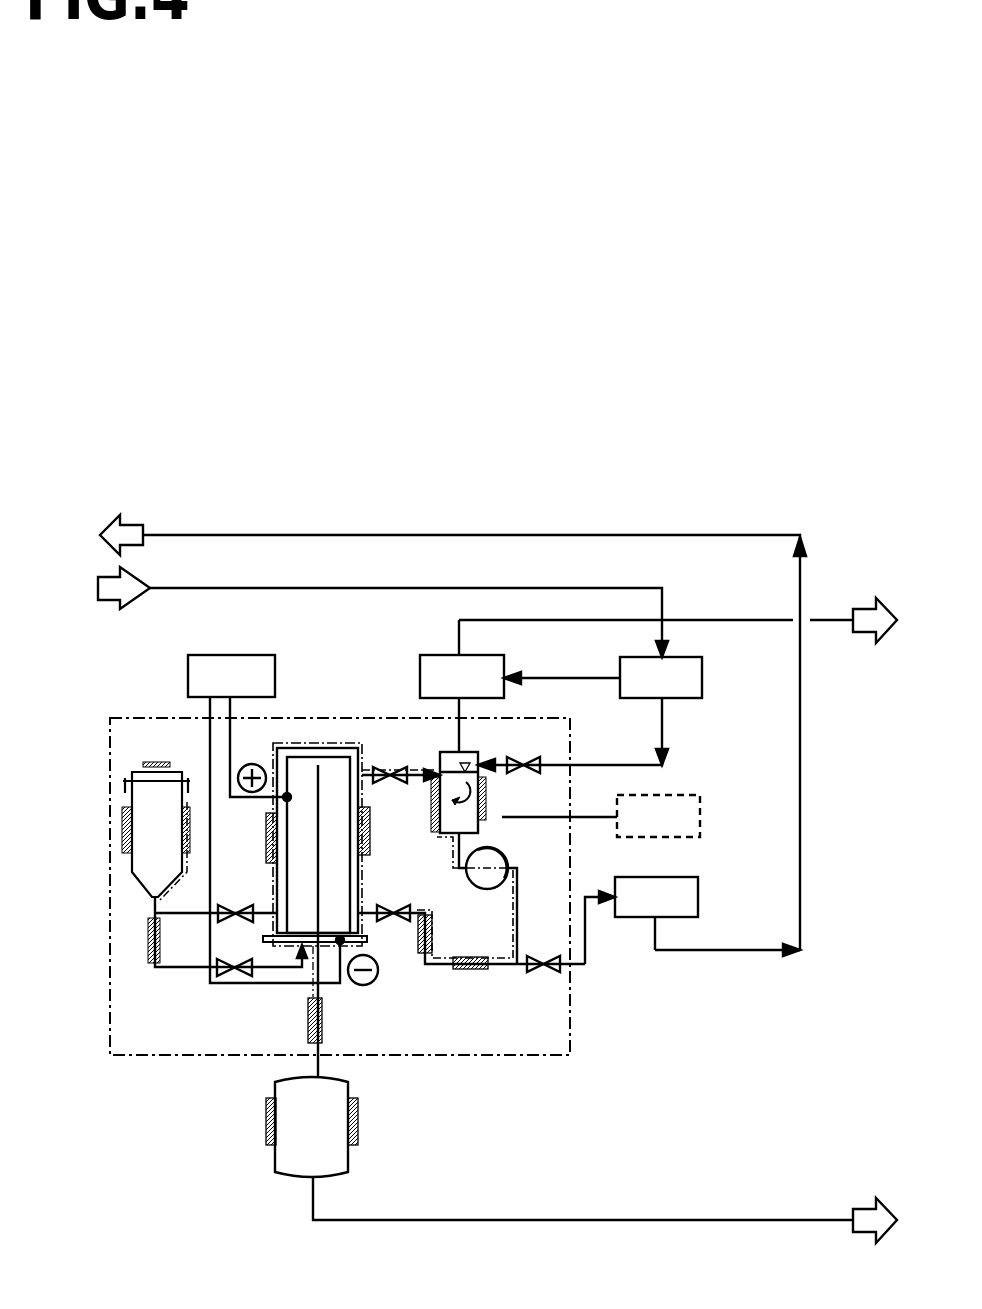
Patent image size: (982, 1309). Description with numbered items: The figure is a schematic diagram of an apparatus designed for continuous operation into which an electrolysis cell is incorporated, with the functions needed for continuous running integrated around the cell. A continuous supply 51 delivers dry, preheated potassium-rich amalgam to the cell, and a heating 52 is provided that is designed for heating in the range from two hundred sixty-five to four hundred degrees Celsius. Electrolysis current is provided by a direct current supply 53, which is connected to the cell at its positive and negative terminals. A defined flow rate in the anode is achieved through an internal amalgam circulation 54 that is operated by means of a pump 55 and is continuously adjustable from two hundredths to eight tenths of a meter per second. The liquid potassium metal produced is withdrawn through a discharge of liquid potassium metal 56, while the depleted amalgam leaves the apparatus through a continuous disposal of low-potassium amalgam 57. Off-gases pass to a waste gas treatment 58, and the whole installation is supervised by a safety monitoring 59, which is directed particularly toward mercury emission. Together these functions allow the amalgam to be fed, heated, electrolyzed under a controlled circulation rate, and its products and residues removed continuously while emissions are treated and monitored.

The continuous supply 51 is at (661, 677).
The heating 52 is at (366, 864).
The direct current supply 53 is at (231, 676).
The internal amalgam circulation 54 is at (480, 849).
The pump 55 is at (482, 890).
The discharge of liquid potassium metal 56 is at (312, 1127).
The continuous disposal of low-potassium amalgam 57 is at (656, 897).
The waste gas treatment 58 is at (462, 676).
The safety monitoring 59 is at (658, 816).